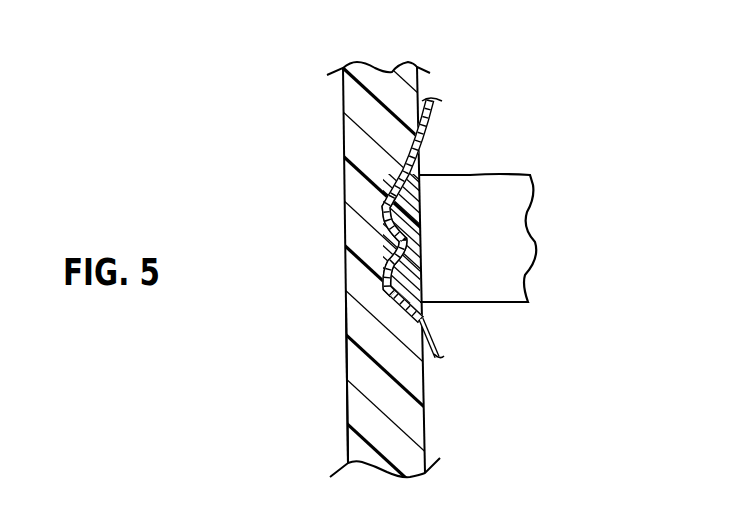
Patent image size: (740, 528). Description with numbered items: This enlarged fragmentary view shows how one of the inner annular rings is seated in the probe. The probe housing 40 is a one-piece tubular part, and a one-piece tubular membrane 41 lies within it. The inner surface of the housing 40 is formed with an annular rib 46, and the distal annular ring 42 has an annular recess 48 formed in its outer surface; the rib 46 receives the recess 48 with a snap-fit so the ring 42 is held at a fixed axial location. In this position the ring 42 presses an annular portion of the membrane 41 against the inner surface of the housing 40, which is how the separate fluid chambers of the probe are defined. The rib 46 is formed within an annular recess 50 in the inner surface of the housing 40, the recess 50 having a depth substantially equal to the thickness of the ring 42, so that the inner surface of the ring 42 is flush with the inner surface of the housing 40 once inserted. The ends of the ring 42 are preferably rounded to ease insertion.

The housing 40 is at (343, 150).
The membrane 41 is at (436, 103).
The distal annular ring 42 is at (468, 175).
The annular rib 46 is at (392, 238).
The annular recess 48 is at (404, 242).
The annular recess in the inner surface of the housing 50 is at (344, 298).